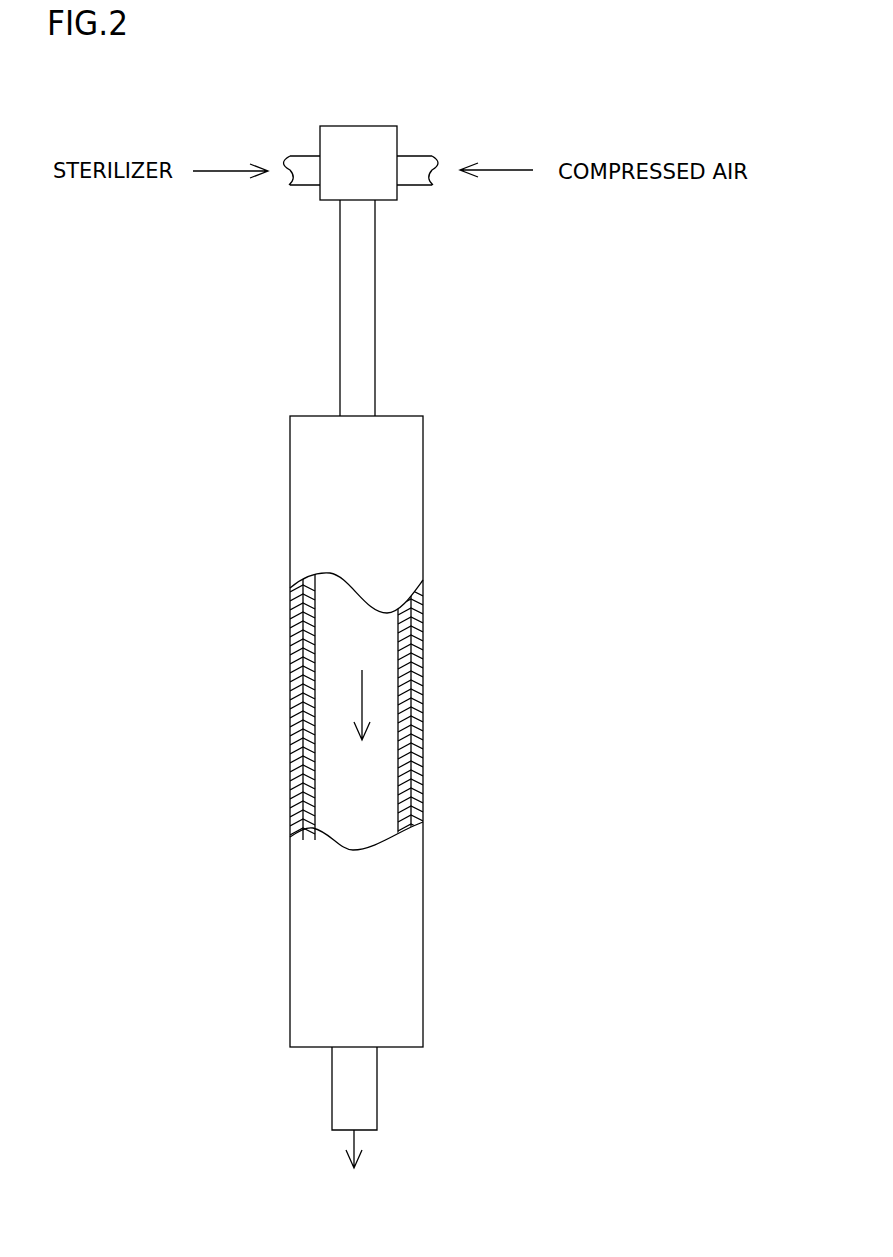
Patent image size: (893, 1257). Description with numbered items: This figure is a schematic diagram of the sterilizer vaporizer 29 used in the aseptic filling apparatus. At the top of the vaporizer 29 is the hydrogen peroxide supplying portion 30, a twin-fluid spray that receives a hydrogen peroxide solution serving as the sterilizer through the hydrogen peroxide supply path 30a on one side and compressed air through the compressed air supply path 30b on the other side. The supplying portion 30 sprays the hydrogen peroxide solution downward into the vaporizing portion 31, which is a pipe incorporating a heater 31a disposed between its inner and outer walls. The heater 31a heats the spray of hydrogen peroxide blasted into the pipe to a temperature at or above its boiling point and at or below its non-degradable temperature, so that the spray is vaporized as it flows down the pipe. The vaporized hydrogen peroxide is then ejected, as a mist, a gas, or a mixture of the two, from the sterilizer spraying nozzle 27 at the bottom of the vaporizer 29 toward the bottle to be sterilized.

The hydrogen peroxide supplying portion 30 is at (368, 126).
The hydrogen peroxide supply path 30a is at (300, 185).
The compressed air supply path 30b is at (410, 185).
The sterilizer vaporizer 29 is at (482, 591).
The vaporizing portion 31 is at (423, 747).
The heater 31a is at (290, 687).
The sterilizer spraying nozzle 27 is at (377, 1090).